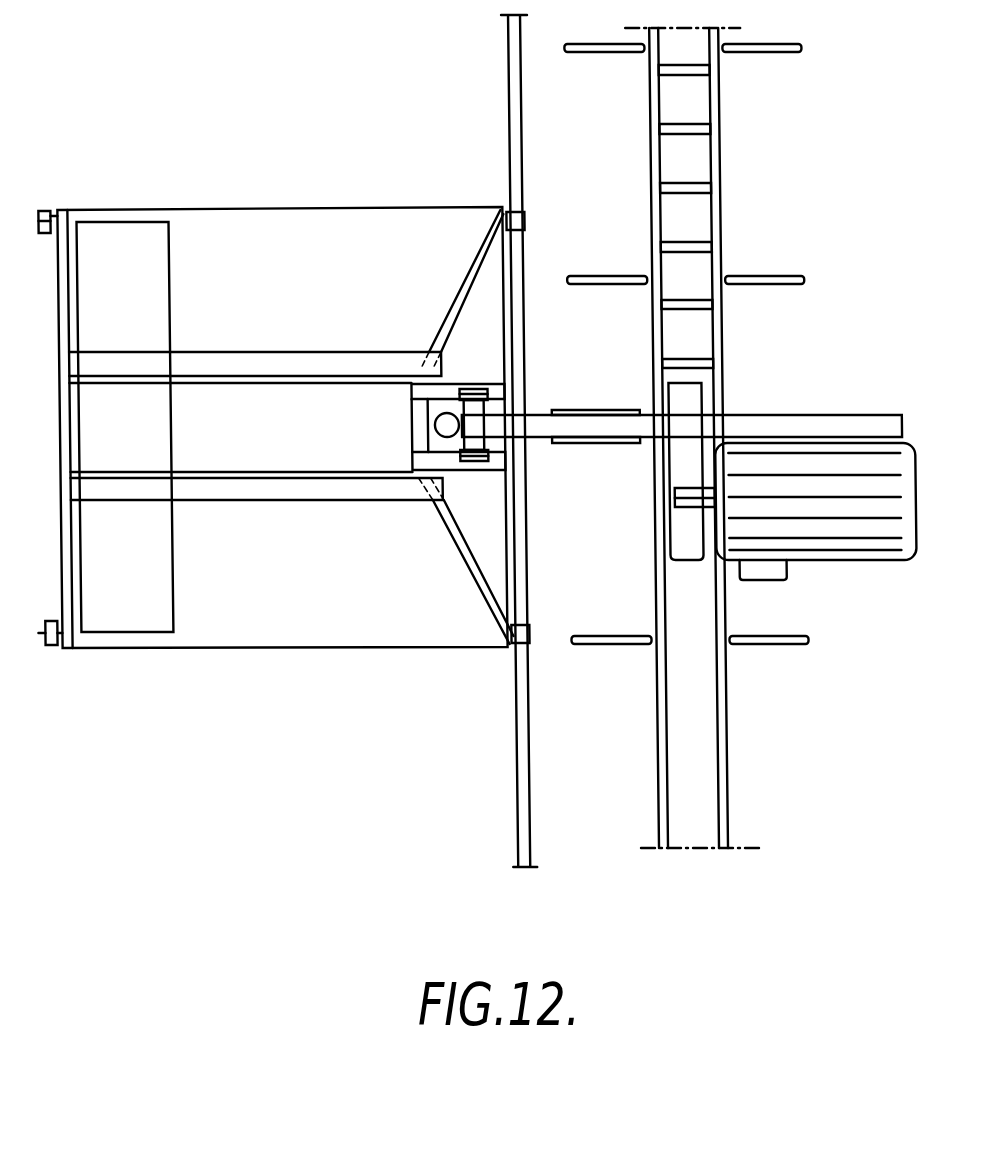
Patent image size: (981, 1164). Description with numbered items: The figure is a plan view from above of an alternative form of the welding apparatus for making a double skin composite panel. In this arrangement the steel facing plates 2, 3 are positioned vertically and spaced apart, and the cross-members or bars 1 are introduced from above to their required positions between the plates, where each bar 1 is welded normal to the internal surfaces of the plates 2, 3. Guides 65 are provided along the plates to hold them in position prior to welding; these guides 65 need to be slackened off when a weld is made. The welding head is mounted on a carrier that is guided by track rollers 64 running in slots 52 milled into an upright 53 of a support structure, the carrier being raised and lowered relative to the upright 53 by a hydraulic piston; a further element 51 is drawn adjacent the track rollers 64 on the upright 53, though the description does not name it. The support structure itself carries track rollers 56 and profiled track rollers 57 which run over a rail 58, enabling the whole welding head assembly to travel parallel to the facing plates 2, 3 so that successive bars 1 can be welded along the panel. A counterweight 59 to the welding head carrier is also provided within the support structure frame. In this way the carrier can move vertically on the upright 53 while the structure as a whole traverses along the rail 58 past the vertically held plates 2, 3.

The cross-member 1 is at (686, 438).
The metal facing plate 2 is at (728, 797).
The metal facing plate 3 is at (660, 797).
The lower bearing flange 51 is at (472, 471).
The slot 52 is at (505, 380).
The upright 53 is at (420, 388).
The track roller 56 is at (47, 208).
The profiled track roller 57 is at (528, 216).
The rail 58 is at (526, 134).
The counterweight 59 is at (143, 585).
The track roller 64 is at (470, 388).
The guide 65 is at (766, 53).